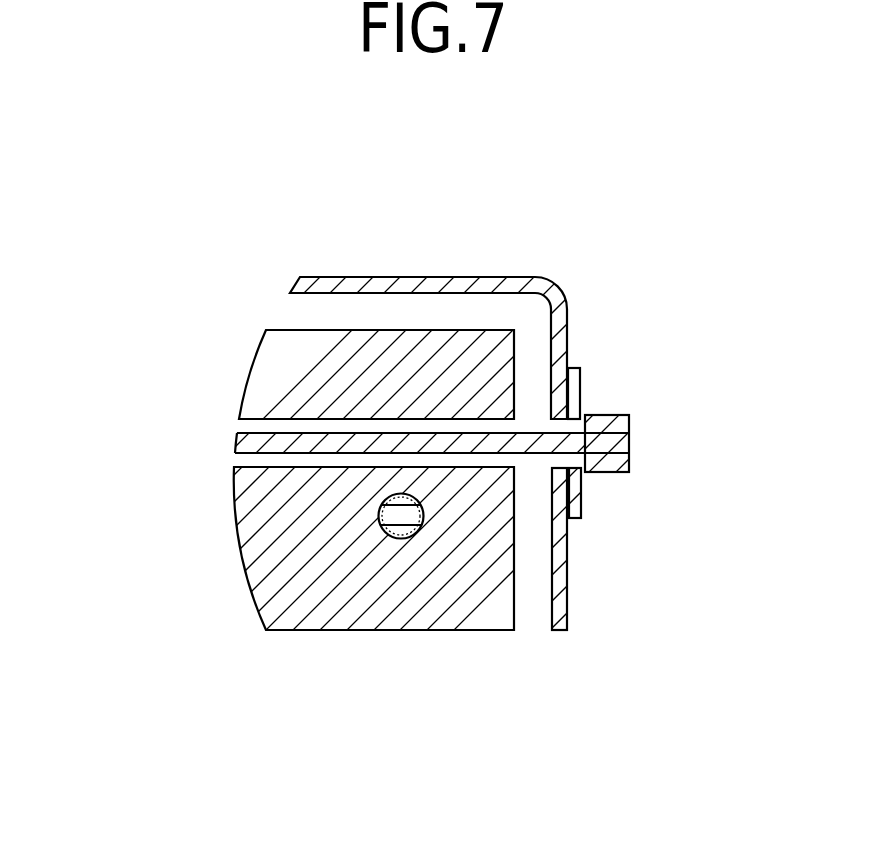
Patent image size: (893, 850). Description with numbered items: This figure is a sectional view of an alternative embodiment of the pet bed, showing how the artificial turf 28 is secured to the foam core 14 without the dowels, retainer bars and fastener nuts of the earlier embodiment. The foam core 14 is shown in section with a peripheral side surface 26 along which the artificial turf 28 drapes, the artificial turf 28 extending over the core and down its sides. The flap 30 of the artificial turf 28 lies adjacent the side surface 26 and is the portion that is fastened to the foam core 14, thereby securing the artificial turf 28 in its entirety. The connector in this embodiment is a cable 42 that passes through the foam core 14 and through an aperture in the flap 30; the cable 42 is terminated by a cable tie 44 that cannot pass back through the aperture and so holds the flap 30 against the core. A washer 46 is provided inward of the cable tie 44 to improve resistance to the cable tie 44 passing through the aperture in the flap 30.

The foam core 14 is at (302, 570).
The side surface 26 is at (446, 593).
The artificial turf 28 is at (513, 282).
The flaps 30 is at (559, 601).
The cables 42 is at (397, 515).
The cable ties 44 is at (617, 421).
The washer 46 is at (582, 497).